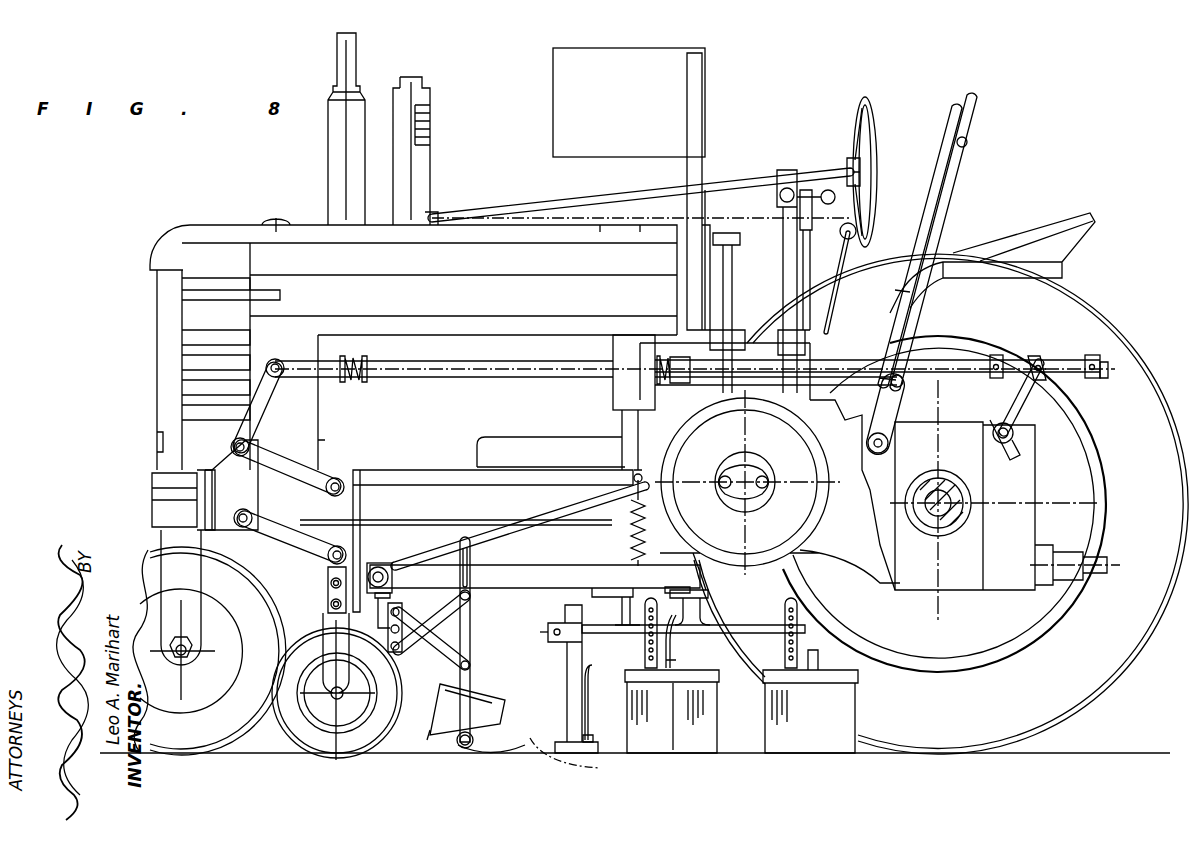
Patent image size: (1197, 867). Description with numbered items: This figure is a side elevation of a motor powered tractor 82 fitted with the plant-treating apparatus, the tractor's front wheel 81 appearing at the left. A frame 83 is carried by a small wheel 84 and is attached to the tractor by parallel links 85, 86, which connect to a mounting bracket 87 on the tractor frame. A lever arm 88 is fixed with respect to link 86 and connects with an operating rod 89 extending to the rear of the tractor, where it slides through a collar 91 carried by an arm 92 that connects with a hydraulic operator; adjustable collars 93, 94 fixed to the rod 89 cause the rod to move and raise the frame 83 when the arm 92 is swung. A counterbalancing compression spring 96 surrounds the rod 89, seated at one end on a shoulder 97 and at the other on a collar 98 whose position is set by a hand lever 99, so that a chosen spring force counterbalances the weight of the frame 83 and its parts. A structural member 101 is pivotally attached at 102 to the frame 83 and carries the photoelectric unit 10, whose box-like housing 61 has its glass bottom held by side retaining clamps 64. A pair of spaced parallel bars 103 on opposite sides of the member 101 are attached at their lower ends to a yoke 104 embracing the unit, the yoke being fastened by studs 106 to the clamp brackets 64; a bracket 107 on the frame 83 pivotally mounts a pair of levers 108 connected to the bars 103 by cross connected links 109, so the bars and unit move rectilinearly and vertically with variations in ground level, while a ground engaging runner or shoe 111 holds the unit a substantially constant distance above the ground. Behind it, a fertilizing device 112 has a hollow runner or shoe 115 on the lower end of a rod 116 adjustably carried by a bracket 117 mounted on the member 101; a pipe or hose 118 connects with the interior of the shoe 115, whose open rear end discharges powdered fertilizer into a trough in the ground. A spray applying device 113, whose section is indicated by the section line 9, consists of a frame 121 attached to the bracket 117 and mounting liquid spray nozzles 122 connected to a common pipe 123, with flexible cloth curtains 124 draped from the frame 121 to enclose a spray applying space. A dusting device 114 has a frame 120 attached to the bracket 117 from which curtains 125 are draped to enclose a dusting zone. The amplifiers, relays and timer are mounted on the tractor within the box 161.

The motor powered tractor 82 is at (250, 225).
The box 161 is at (553, 112).
The hand lever 99 is at (948, 196).
The adjustable collar 94 is at (998, 358).
The collar 91 is at (1040, 356).
The adjustable collar 93 is at (1092, 356).
The arm 92 is at (1005, 410).
The counterbalancing compression spring 96 is at (370, 361).
The shoulder 97 is at (348, 380).
The operating rod 89 is at (536, 376).
The collar 98 is at (660, 388).
The lever arm 88 is at (268, 406).
The parallel link 86 is at (288, 456).
The mounting bracket 87 is at (250, 495).
The frame 83 is at (360, 504).
The parallel link 85 is at (263, 533).
The pivot 102 is at (379, 566).
The structural member 101 is at (538, 553).
The small wheel 84 is at (302, 640).
The bracket 107 is at (396, 598).
The levers 108 is at (400, 612).
The cross connected links 109 is at (471, 608).
The spaced parallel bars 103 is at (469, 622).
The yoke 104 is at (471, 690).
The photoelectric unit 10 is at (440, 683).
The box-like housing 61 is at (440, 695).
The side retaining clamps 64 is at (430, 735).
The studs 106 is at (463, 752).
The ground engaging runner or shoe 111 is at (500, 755).
The fertilizing device 112 is at (555, 768).
The hollow runner or shoe 115 is at (550, 740).
The rod 116 is at (568, 667).
The pipe or hose 118 is at (585, 697).
The bracket 117 is at (600, 634).
The common pipe 123 is at (708, 604).
The liquid spray nozzles 122 is at (690, 663).
The frame 121 is at (712, 672).
The section line 9 is at (670, 648).
The applying device 113 is at (711, 717).
The flexible cloth curtains 124 is at (654, 753).
The curtains 125 is at (845, 722).
The frame 120 is at (858, 675).
The applying device 114 is at (864, 702).
The front wheel 81 is at (295, 755).